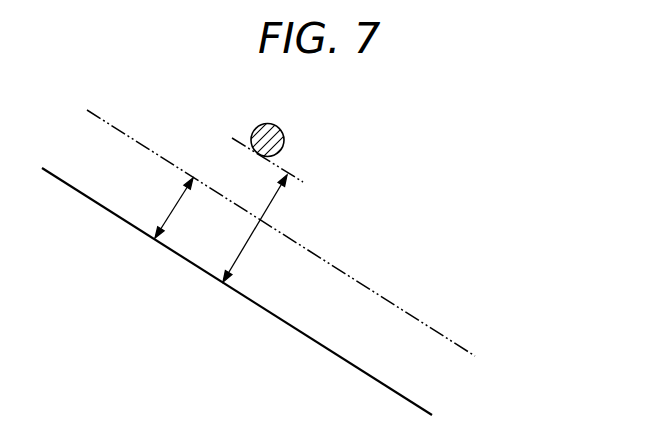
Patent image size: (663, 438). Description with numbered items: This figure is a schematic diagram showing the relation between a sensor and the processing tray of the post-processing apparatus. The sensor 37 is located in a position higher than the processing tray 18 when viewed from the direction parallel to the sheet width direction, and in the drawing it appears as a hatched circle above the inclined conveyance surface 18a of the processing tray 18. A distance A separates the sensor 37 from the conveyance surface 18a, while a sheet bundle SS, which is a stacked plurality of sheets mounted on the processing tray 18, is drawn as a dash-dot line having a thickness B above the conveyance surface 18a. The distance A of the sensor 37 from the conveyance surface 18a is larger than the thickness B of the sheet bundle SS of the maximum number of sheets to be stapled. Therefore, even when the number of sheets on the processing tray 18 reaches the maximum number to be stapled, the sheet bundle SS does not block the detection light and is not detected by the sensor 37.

The sensor 37 is at (284, 138).
The sheet bundle SS is at (320, 258).
The conveyance surface 18a is at (407, 398).
The processing tray 18 is at (312, 291).
The distance A is at (260, 228).
The thickness B is at (170, 208).